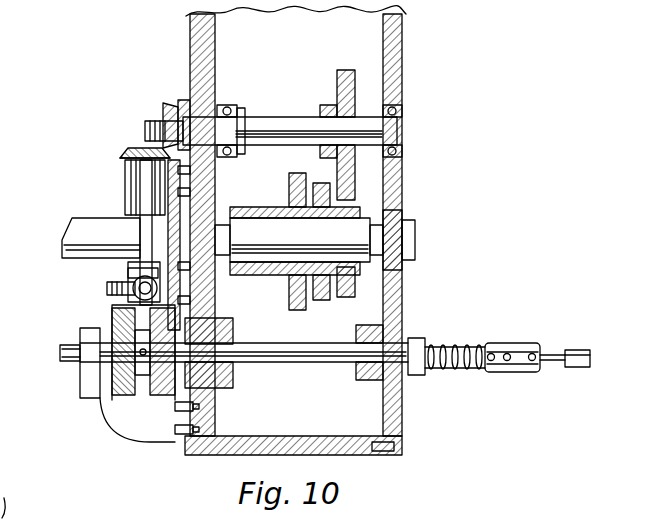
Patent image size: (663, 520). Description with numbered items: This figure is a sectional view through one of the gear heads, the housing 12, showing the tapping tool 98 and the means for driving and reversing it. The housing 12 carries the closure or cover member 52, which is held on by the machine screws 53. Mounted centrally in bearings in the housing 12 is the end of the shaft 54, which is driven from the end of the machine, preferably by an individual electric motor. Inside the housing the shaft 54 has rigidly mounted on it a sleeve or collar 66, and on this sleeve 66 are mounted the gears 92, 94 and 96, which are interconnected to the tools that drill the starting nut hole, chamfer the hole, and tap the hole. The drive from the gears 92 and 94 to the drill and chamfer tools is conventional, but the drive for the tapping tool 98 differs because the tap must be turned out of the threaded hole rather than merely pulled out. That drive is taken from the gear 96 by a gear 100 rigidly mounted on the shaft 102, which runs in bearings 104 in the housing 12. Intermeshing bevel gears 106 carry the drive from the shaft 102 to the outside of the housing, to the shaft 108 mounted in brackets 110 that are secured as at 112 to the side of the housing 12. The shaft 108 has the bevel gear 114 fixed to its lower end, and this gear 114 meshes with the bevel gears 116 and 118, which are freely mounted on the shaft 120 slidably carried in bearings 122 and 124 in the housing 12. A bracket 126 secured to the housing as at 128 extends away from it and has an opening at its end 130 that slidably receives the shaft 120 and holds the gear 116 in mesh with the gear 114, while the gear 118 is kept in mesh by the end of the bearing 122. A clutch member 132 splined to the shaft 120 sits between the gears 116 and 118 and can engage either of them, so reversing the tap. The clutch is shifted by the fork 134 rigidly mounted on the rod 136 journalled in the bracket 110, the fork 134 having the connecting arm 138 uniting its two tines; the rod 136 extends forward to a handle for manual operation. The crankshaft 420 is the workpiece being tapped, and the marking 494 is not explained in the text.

The housing 12 is at (218, 32).
The closure or cover member 52 is at (395, 50).
The machine screws 53 is at (403, 443).
The shaft 54 is at (76, 222).
The sleeve or collar 66 is at (270, 236).
The gear 92 is at (298, 310).
The gear 94 is at (321, 300).
The gear 96 is at (345, 297).
The tapping tool 98 is at (560, 362).
The gear 100 is at (347, 70).
The shaft 102 is at (292, 126).
The bearings 104 is at (222, 108).
The bevel gears 106 is at (128, 148).
The shaft 108 is at (135, 190).
The brackets 110 is at (120, 160).
The securing means 112 is at (160, 262).
The bevel gear 114 is at (135, 302).
The bevel gear 116 is at (138, 340).
The bevel gear 118 is at (165, 385).
The shaft 120 is at (282, 356).
The bearing 122 is at (236, 382).
The bearing 124 is at (365, 380).
The bracket 126 is at (128, 417).
The securing means 128 is at (175, 428).
The end of bracket 130 is at (85, 350).
The clutch member 132 is at (140, 370).
The fork 134 is at (140, 338).
The rod 136 is at (185, 290).
The connecting arm 138 is at (105, 288).
The crankshaft 420 is at (578, 350).
The reference numeral 494 is at (30, 508).